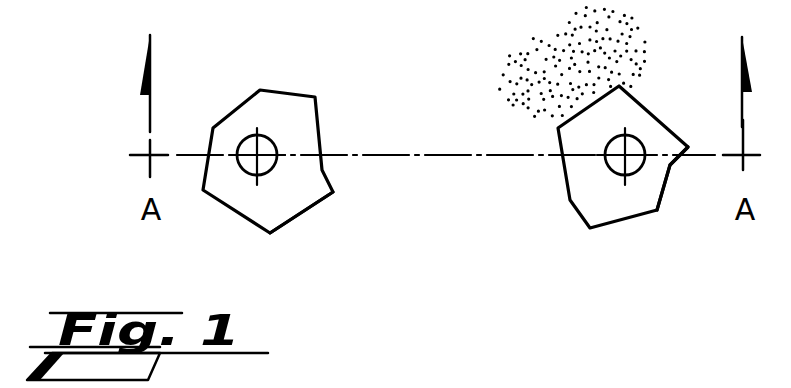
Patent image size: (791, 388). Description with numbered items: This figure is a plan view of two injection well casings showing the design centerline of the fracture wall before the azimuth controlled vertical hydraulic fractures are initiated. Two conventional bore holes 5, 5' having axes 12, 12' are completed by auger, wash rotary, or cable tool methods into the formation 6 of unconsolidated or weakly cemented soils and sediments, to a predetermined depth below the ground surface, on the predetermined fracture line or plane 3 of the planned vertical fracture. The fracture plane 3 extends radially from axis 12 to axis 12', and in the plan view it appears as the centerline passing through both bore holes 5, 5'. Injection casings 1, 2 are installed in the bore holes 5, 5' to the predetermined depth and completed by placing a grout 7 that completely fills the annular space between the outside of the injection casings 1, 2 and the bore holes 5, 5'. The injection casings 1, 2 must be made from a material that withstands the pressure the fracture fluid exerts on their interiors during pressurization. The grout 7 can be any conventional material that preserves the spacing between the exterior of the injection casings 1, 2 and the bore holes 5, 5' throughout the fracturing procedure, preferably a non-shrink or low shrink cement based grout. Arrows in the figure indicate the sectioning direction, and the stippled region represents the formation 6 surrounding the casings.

The injection casing 1 is at (275, 135).
The injection casing 2 is at (637, 140).
The fracture line or plane 3 is at (467, 155).
The bore hole 5 is at (333, 237).
The bore hole 5' is at (686, 205).
The formation 6 is at (554, 58).
The grout 7 is at (243, 142).
The axis 12 is at (213, 203).
The axis 12' is at (564, 171).